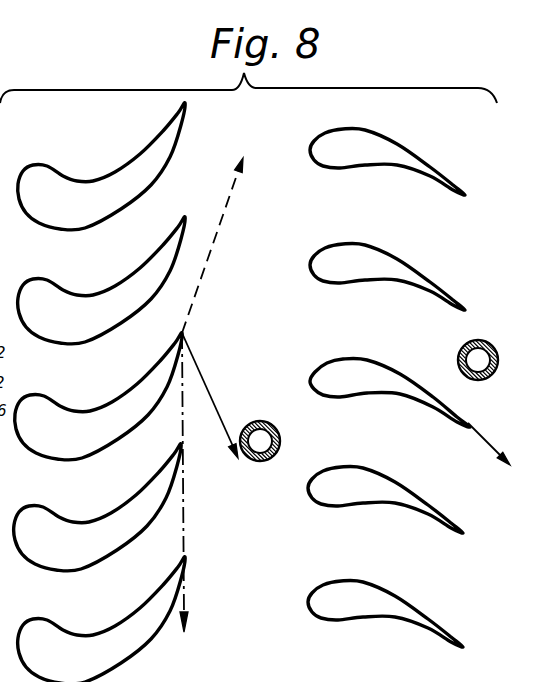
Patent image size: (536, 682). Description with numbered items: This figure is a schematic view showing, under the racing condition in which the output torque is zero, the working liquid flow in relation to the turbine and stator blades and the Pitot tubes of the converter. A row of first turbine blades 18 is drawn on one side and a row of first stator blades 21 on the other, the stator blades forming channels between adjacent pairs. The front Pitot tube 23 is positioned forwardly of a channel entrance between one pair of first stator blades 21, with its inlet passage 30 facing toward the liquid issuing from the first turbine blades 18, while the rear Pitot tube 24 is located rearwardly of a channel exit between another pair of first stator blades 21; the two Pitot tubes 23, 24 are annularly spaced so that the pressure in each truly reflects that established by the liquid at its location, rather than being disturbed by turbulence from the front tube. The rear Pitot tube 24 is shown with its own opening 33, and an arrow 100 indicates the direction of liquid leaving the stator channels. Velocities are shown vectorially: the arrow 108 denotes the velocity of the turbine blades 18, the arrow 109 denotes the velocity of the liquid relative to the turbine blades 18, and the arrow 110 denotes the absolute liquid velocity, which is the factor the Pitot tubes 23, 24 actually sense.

The first turbine blades 18 is at (85, 213).
The first stator blades 21 is at (360, 163).
The front Pitot tube 23 is at (269, 424).
The rear Pitot tube 24 is at (490, 344).
The inlet passage 30 is at (255, 461).
The tube bore 33 is at (468, 377).
The flow direction arrow 100 is at (485, 443).
The velocity of the turbine blades 108 is at (187, 521).
The velocity of the liquid relative to the turbine blades 109 is at (206, 263).
The absolute liquid velocity 110 is at (200, 373).